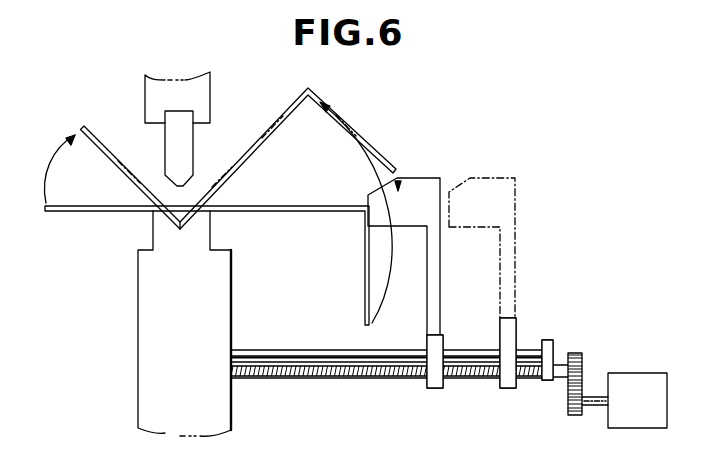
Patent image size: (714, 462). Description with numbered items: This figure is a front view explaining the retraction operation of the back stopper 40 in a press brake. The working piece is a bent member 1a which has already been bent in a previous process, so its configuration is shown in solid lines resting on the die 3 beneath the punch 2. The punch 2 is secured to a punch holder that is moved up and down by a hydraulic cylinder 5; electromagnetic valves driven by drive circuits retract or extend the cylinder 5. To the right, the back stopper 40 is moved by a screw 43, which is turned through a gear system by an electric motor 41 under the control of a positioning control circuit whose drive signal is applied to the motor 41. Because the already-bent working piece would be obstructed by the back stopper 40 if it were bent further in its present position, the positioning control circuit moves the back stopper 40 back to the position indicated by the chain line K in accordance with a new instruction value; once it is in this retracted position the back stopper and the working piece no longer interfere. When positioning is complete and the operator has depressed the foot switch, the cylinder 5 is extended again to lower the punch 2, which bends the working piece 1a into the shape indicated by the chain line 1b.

The bent member 1a is at (302, 213).
The chain line showing bent working piece 1b is at (253, 157).
The punch 2 is at (183, 149).
The die 3 is at (160, 228).
The hydraulic cylinder 5 is at (302, 348).
The back stopper 40 is at (432, 185).
The electric motor 41 is at (625, 375).
The screw 43 is at (348, 382).
The chain line indicating retracted back stopper position K is at (515, 212).